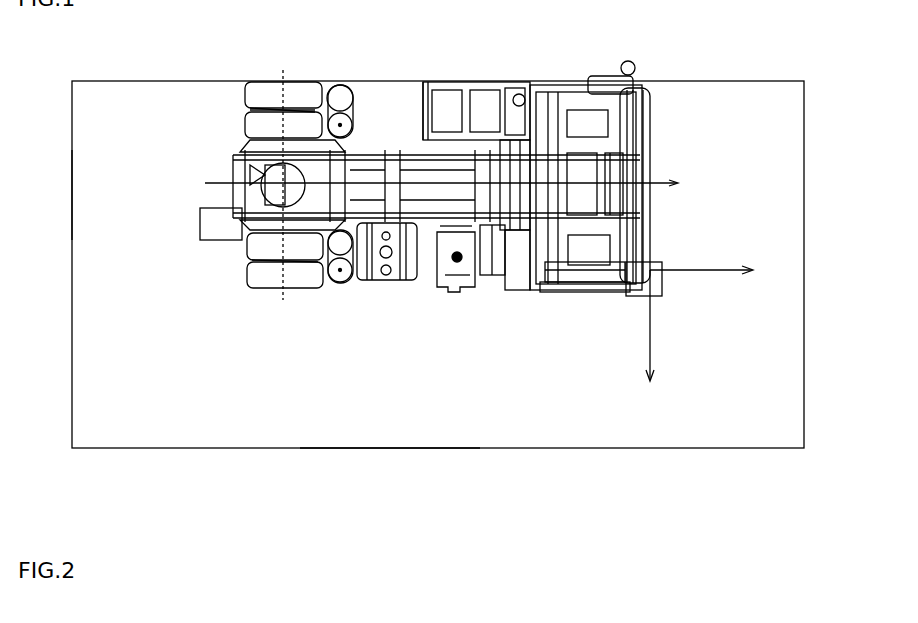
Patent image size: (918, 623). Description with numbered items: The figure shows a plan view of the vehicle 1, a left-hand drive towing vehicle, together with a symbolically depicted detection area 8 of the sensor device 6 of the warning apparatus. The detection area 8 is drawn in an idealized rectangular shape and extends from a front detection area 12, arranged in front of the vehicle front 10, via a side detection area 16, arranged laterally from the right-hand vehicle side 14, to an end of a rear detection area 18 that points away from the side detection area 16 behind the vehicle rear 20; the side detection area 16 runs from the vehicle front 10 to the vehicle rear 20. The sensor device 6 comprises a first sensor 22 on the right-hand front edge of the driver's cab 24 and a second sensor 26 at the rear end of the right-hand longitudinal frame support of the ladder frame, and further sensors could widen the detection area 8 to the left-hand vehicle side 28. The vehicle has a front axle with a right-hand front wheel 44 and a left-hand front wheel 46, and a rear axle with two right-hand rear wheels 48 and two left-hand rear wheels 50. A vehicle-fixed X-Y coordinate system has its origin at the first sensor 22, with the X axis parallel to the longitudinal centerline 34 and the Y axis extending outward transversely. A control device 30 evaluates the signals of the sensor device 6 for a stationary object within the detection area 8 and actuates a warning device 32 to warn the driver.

The vehicle 1 is at (393, 84).
The sensor device 6 is at (602, 243).
The detection area 8 is at (419, 416).
The vehicle front 10 is at (638, 146).
The front detection area 12 is at (760, 190).
The right-hand vehicle side 14 is at (450, 279).
The side detection area 16 is at (462, 386).
The rear detection area 18 is at (128, 206).
The vehicle rear 20 is at (234, 175).
The first sensor 22 is at (660, 284).
The driver's cab 24 is at (636, 90).
The second sensor 26 is at (220, 226).
The left-hand vehicle side 28 is at (445, 95).
The control device 30 is at (584, 120).
The warning device 32 is at (615, 174).
The longitudinal centerline 34 is at (208, 190).
The right-hand front wheel 44 is at (590, 282).
The left-hand front wheel 46 is at (592, 80).
The right-hand rear wheels 48 is at (302, 266).
The left-hand rear wheels 50 is at (298, 96).